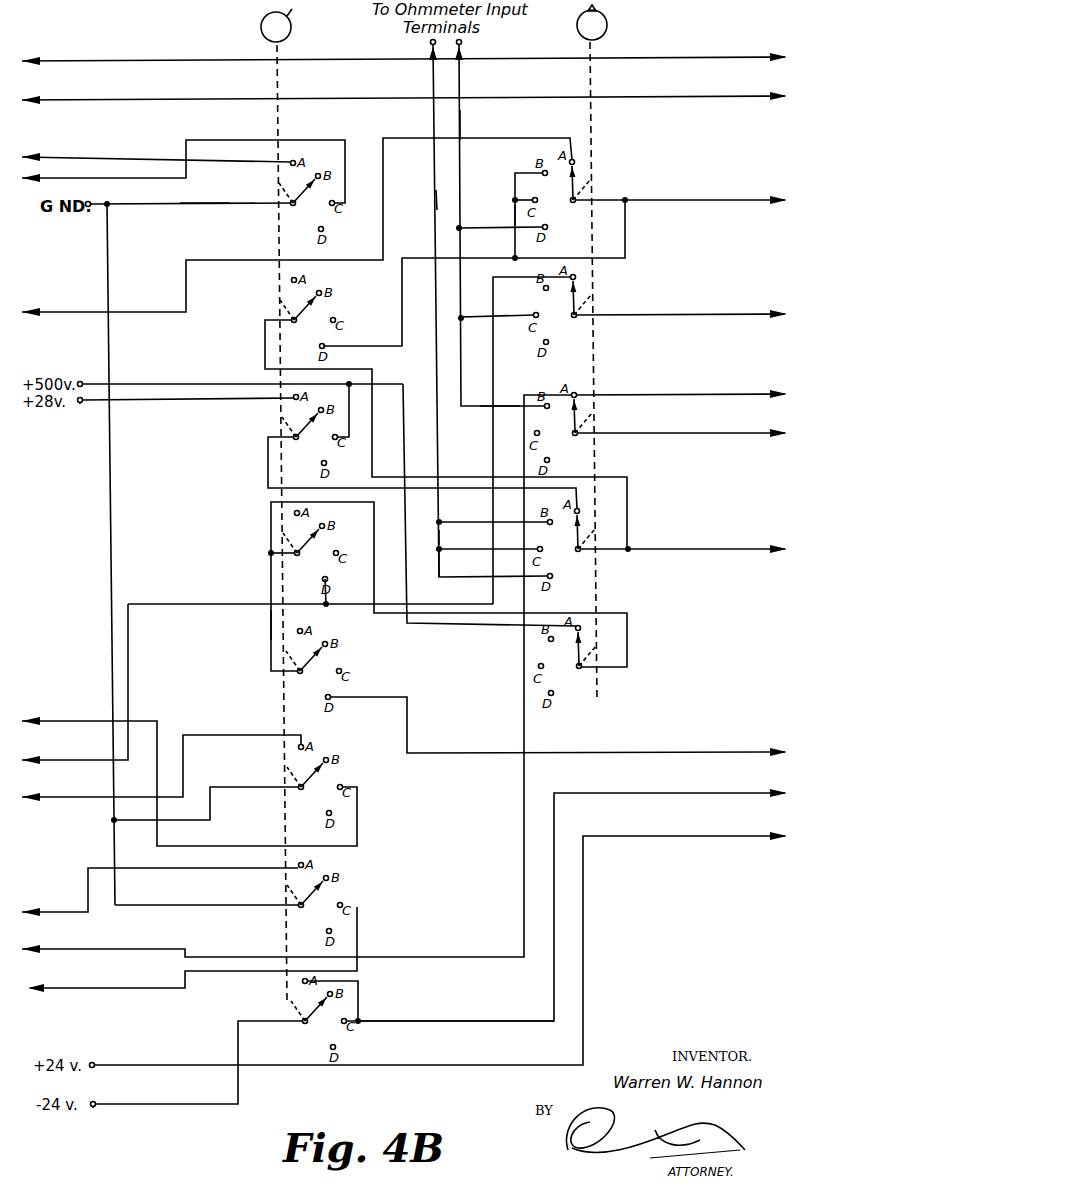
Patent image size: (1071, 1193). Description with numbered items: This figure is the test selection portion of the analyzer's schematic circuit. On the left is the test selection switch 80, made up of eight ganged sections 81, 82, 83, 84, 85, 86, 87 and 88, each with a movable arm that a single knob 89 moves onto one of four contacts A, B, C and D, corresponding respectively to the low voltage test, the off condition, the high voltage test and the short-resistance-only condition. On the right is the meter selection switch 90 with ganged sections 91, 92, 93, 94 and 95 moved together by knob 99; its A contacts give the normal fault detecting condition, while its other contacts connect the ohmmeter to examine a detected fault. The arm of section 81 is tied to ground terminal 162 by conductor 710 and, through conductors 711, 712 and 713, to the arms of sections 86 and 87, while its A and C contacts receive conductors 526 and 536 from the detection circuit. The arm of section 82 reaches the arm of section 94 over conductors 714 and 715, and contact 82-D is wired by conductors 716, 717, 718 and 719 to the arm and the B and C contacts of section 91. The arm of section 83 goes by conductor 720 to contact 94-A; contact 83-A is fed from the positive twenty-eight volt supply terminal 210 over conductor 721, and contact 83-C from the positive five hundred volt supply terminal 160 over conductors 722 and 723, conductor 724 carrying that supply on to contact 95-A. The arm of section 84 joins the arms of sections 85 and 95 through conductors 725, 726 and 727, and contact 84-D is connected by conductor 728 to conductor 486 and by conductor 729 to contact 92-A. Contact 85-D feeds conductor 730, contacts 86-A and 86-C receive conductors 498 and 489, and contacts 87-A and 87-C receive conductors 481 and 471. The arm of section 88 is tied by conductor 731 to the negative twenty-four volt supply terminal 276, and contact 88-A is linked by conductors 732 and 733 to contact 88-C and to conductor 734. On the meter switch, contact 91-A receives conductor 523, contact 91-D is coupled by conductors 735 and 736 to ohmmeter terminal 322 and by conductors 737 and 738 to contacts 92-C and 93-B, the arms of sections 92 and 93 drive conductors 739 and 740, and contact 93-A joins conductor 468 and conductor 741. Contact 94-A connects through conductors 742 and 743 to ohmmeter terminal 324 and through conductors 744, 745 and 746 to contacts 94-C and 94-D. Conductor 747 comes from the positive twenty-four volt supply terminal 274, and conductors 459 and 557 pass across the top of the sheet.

The line 459 is at (58, 60).
The line 557 is at (66, 100).
The conductor 526 is at (70, 157).
The conductor 536 is at (76, 178).
The ground terminal 162 is at (92, 203).
The conductor 710 is at (195, 202).
The conductor 711 is at (112, 465).
The conductor 712 is at (242, 786).
The conductor 713 is at (210, 904).
The test selection switch 80 is at (275, 228).
The knob 89 is at (280, 32).
The knob 99 is at (600, 25).
The meter selection switch 90 is at (600, 133).
The ohmmeter terminal 324 is at (431, 43).
The ohmmeter terminal 322 is at (462, 42).
The conductor 736 is at (461, 125).
The conductor 743 is at (434, 200).
The conductor 719 is at (522, 201).
The conductor 718 is at (513, 214).
The conductor 735 is at (484, 230).
The conductor 716 is at (626, 245).
The conductor 717 is at (733, 199).
The conductor 523 is at (60, 311).
The conductor 739 is at (730, 313).
The conductor 737 is at (502, 319).
The conductor 738 is at (502, 404).
The positive 500 volt supply terminal 160 is at (83, 381).
The conductor 723 is at (172, 383).
The conductor 724 is at (404, 405).
The conductor 721 is at (190, 402).
The positive 28 volt supply terminal 210 is at (80, 403).
The conductor 722 is at (350, 437).
The conductor 720 is at (352, 488).
The conductor 714 is at (425, 476).
The conductor 729 is at (492, 442).
The conductor 468 is at (62, 949).
The conductor 741 is at (720, 393).
The conductor 740 is at (722, 432).
The conductor 715 is at (745, 548).
The conductor 742 is at (466, 521).
The conductor 745 is at (468, 548).
The conductor 746 is at (482, 575).
The conductor 744 is at (437, 543).
The conductor 725 is at (298, 558).
The conductor 727 is at (375, 553).
The conductor 726 is at (270, 625).
The conductor 728 is at (330, 597).
The conductor 486 is at (52, 760).
The conductor 489 is at (46, 721).
The conductor 498 is at (56, 797).
The conductor 730 is at (720, 751).
The conductor 734 is at (723, 792).
The conductor 747 is at (730, 835).
The positive 24 volt supply terminal 274 is at (95, 1063).
The conductor 481 is at (56, 911).
The conductor 471 is at (65, 988).
The conductor 732 is at (359, 995).
The conductor 733 is at (358, 1023).
The conductor 731 is at (176, 1103).
The negative 24 volt supply terminal 276 is at (97, 1108).
The section of test selection switch 81 is at (311, 201).
The section of test selection switch 82 is at (312, 318).
The section of test selection switch 83 is at (314, 435).
The section of test selection switch 84 is at (315, 551).
The section of test selection switch 85 is at (318, 669).
The section of test selection switch 86 is at (319, 785).
The section of test selection switch 87 is at (319, 903).
The section of test selection switch 88 is at (323, 1019).
The section of meter selection switch 91 is at (558, 196).
The section of meter selection switch 92 is at (559, 311).
The section of meter selection switch 93 is at (560, 429).
The section of meter selection switch 94 is at (563, 545).
The section of meter selection switch 95 is at (564, 662).